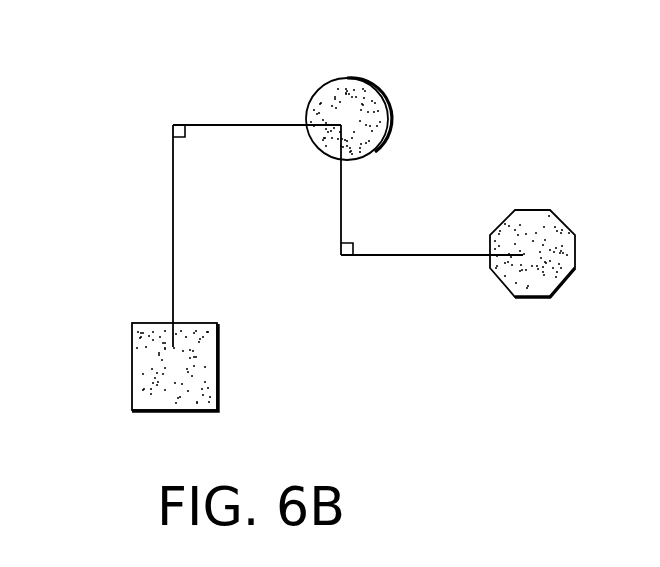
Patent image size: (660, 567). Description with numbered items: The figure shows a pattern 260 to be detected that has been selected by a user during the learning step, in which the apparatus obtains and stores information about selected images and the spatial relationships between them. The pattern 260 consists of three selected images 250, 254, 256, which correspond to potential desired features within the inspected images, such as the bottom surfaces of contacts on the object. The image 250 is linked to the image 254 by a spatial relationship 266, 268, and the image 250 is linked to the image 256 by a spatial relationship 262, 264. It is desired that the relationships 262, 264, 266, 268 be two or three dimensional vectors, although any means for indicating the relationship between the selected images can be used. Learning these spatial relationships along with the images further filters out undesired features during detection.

The selected image 250 is at (356, 78).
The selected image 254 is at (535, 208).
The selected image 256 is at (176, 412).
The pattern 260 is at (445, 404).
The spatial relationship 262 is at (172, 228).
The spatial relationship 264 is at (200, 123).
The spatial relationship 266 is at (340, 224).
The spatial relationship 268 is at (470, 256).